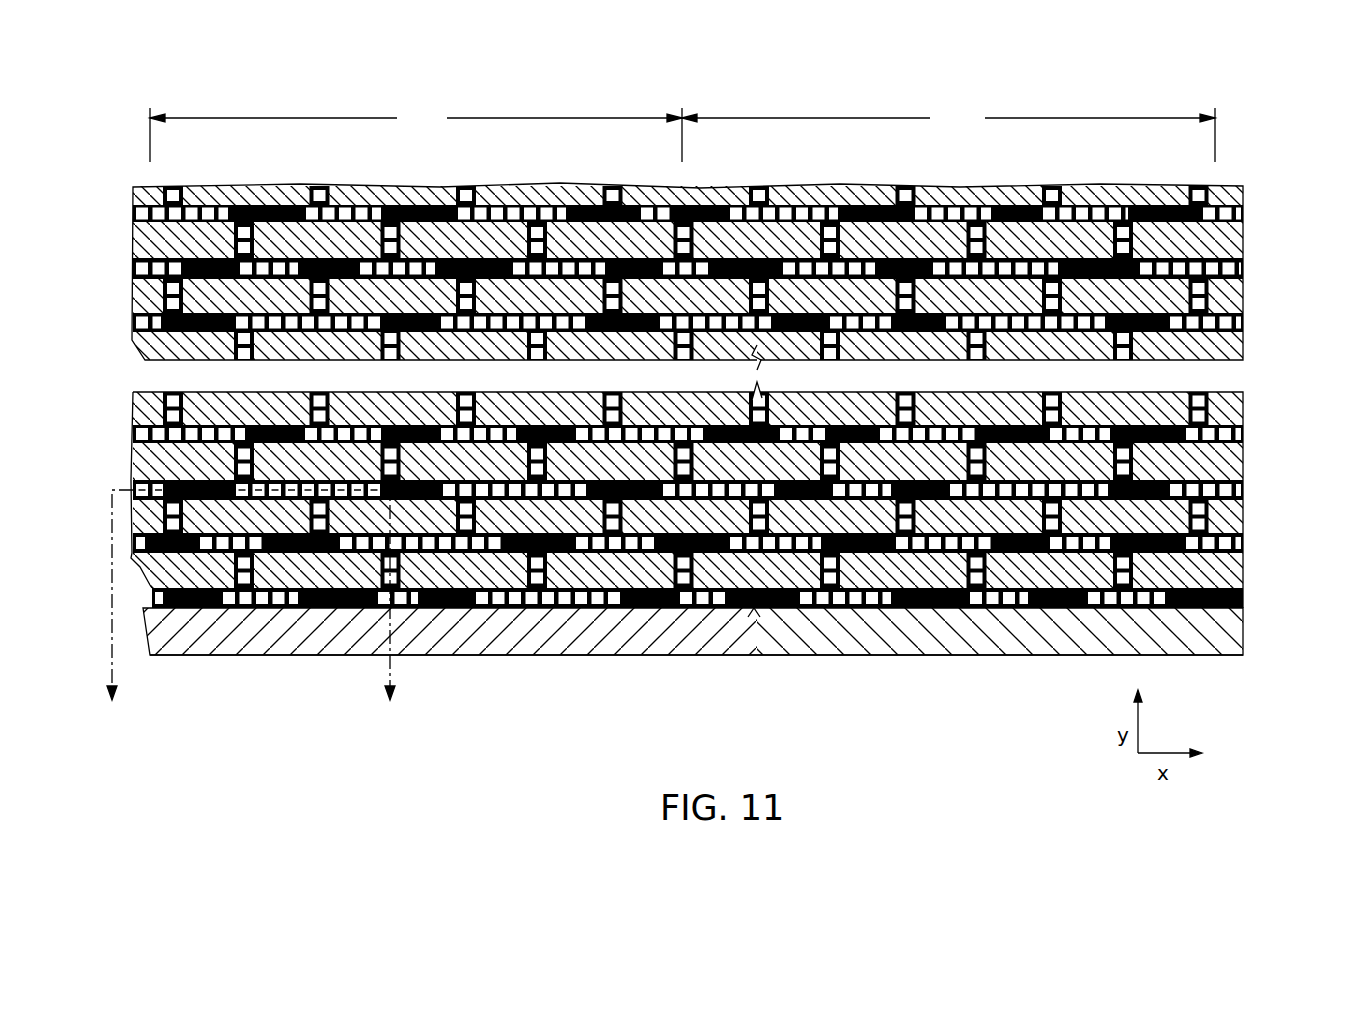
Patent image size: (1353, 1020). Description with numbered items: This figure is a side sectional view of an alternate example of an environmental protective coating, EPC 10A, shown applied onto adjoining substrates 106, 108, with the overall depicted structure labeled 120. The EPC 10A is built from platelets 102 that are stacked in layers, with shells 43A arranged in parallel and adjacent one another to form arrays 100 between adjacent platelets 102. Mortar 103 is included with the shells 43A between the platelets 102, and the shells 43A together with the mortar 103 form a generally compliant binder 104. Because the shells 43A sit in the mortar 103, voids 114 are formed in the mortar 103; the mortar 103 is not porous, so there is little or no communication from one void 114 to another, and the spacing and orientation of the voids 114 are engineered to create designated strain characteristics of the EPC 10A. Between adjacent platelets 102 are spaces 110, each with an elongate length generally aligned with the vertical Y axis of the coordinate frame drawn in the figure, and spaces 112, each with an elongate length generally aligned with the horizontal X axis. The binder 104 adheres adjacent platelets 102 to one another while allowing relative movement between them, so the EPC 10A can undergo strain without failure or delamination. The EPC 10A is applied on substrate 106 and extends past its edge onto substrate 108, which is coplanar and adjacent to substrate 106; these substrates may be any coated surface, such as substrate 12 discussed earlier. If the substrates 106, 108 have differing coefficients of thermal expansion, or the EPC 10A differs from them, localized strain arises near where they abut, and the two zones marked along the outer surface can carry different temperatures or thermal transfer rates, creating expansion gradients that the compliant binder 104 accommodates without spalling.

The multilayer structure 120 is at (705, 76).
The environmental protective coating 10A is at (1247, 148).
The spaces 112 is at (1258, 201).
The voids 114 is at (1222, 212).
The arrays 100 is at (1258, 264).
The shells 43A is at (1237, 318).
The platelets 102 is at (152, 241).
The spaces 110 is at (148, 302).
The mortar 103 is at (135, 428).
The binder 104 is at (1237, 432).
The substrate 108 is at (1218, 633).
The substrate 106 is at (510, 656).
The substrate 12 is at (252, 608).